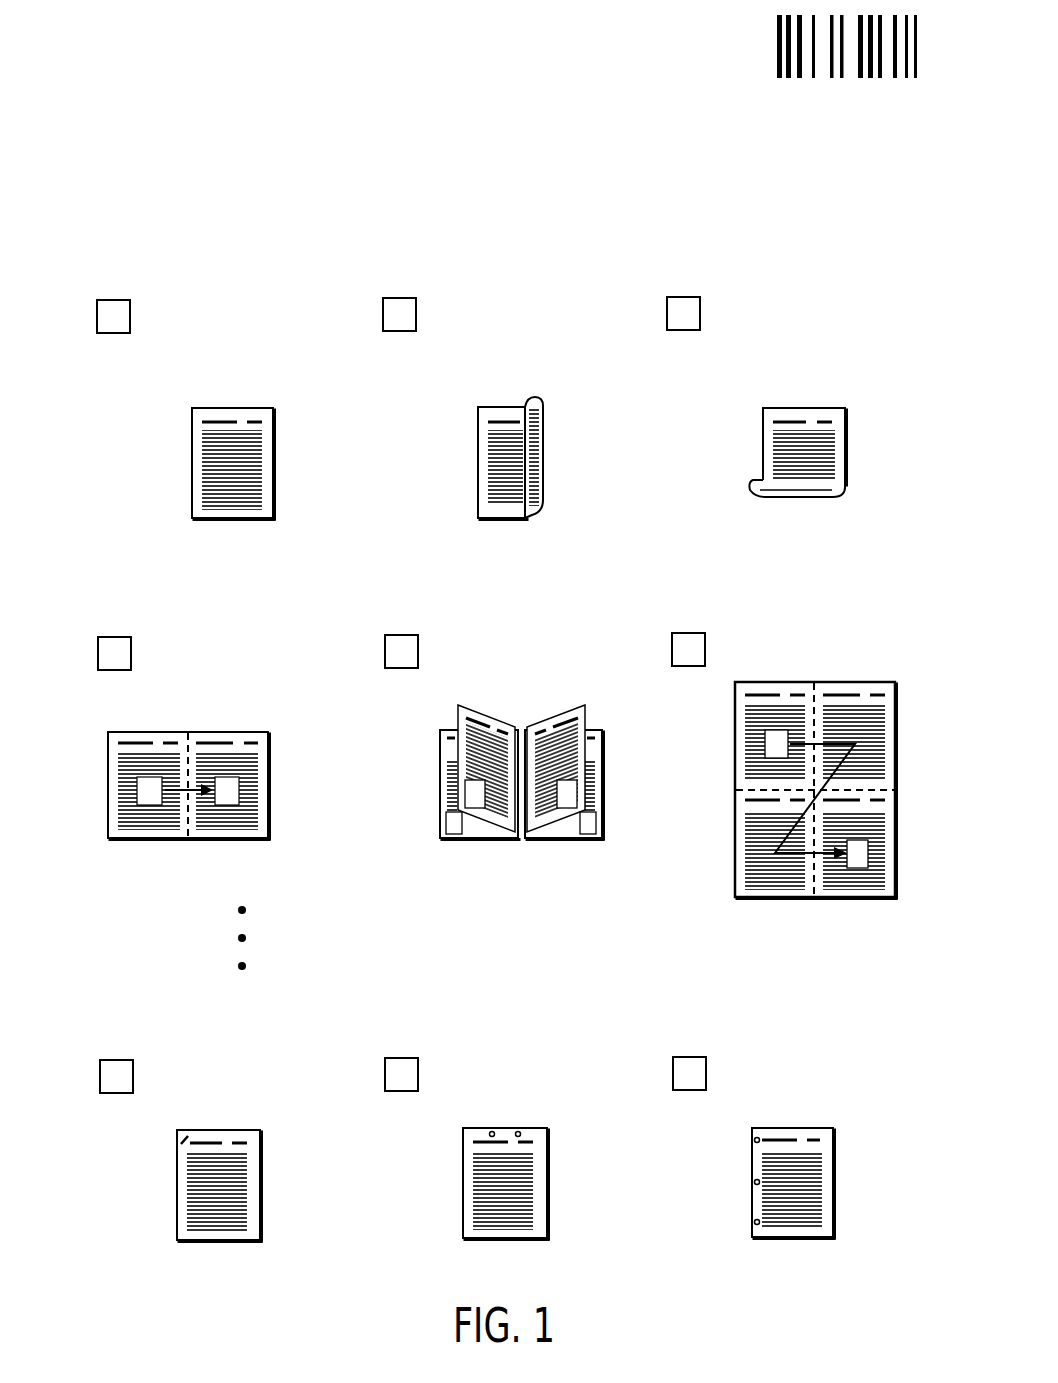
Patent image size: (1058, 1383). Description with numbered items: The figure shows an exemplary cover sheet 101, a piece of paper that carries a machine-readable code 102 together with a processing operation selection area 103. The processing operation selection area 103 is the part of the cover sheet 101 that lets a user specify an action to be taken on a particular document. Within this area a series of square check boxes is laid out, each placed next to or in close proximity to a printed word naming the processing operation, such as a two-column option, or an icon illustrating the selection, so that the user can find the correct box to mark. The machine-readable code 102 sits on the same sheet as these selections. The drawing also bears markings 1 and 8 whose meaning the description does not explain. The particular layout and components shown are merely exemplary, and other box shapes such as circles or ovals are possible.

The cover sheet 101 is at (502, 707).
The machine-readable code 102 is at (840, 85).
The processing operation selection area 103 is at (850, 227).
The booklet page 1 is at (452, 849).
The booklet page 8 is at (590, 849).